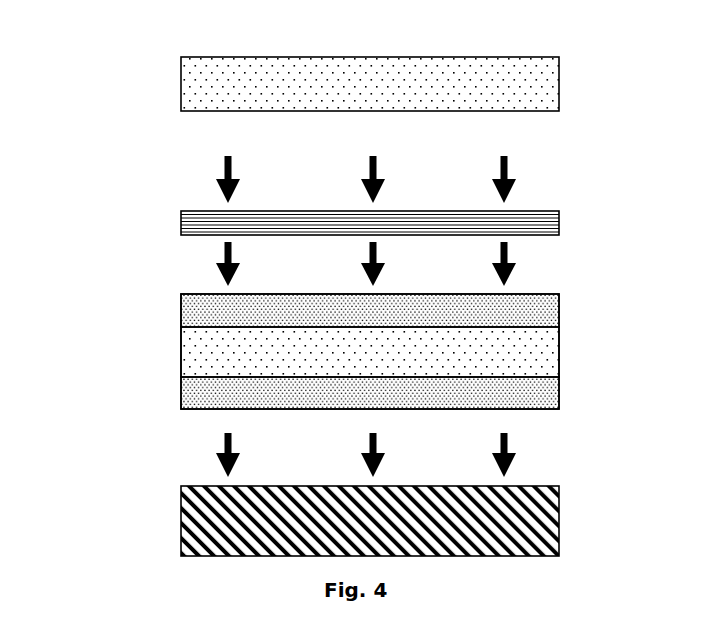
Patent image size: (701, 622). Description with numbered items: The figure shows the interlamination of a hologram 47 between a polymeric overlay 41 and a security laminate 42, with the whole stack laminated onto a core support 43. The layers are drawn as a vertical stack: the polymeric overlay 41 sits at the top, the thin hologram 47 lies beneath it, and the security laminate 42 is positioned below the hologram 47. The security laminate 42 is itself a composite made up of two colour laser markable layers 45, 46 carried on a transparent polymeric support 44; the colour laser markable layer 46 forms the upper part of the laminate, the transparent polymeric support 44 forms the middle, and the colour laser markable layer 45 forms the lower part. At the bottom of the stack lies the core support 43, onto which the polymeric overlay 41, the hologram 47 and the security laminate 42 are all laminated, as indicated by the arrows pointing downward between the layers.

The polymeric overlay 41 is at (175, 93).
The security laminate 42 is at (342, 351).
The core support 43 is at (540, 530).
The transparent polymeric support 44 is at (545, 350).
The colour laser markable layer 45 is at (545, 394).
The colour laser markable layer 46 is at (545, 310).
The hologram 47 is at (540, 220).